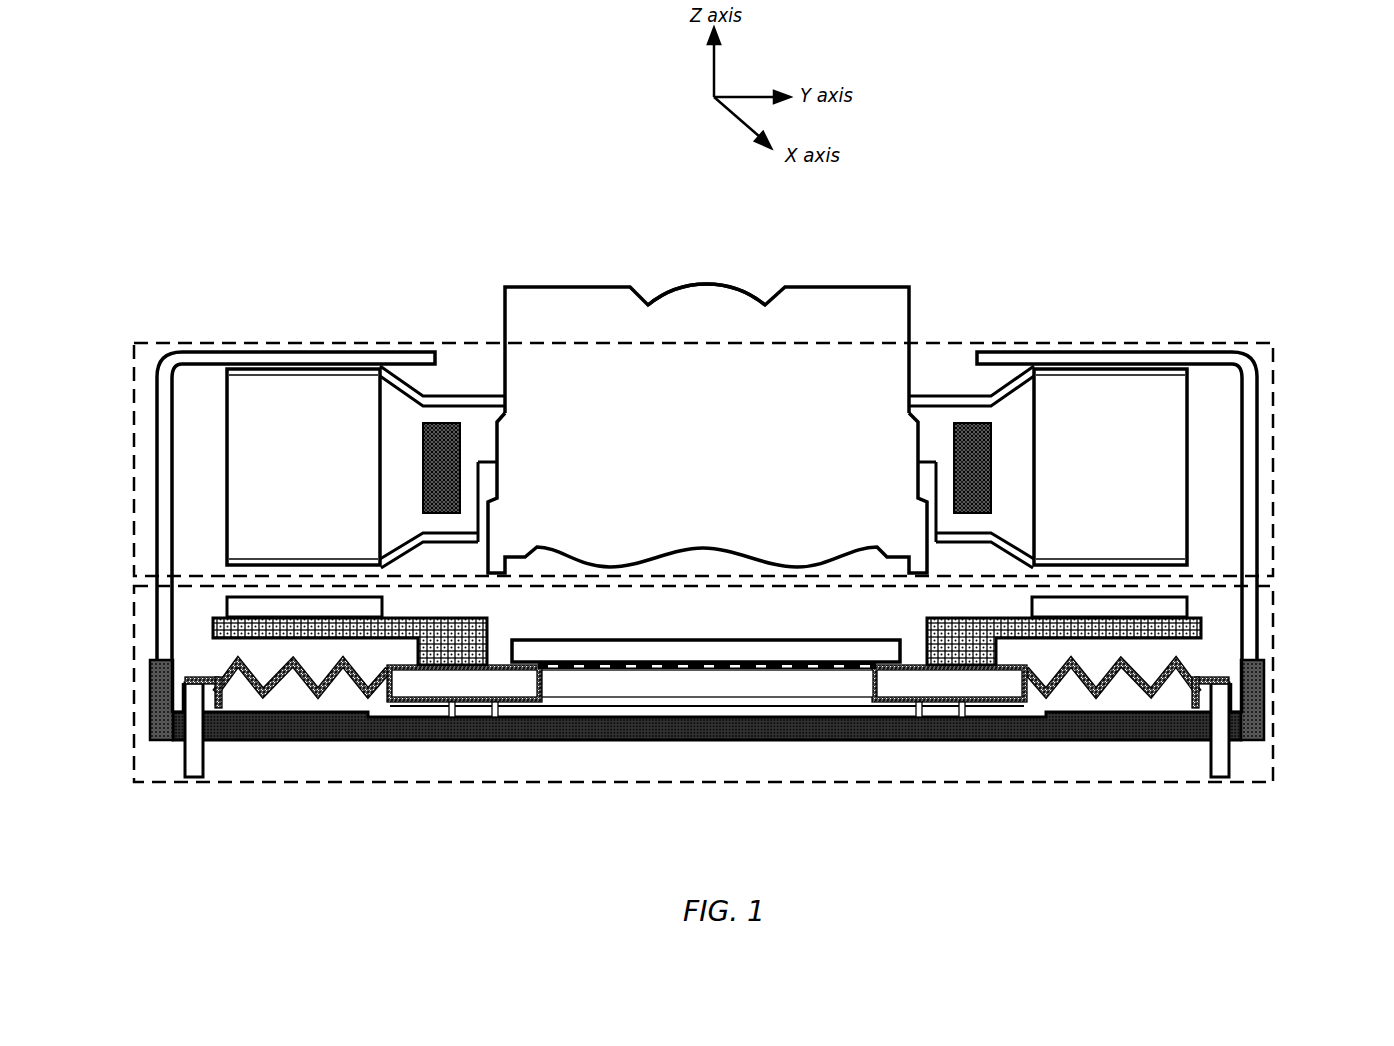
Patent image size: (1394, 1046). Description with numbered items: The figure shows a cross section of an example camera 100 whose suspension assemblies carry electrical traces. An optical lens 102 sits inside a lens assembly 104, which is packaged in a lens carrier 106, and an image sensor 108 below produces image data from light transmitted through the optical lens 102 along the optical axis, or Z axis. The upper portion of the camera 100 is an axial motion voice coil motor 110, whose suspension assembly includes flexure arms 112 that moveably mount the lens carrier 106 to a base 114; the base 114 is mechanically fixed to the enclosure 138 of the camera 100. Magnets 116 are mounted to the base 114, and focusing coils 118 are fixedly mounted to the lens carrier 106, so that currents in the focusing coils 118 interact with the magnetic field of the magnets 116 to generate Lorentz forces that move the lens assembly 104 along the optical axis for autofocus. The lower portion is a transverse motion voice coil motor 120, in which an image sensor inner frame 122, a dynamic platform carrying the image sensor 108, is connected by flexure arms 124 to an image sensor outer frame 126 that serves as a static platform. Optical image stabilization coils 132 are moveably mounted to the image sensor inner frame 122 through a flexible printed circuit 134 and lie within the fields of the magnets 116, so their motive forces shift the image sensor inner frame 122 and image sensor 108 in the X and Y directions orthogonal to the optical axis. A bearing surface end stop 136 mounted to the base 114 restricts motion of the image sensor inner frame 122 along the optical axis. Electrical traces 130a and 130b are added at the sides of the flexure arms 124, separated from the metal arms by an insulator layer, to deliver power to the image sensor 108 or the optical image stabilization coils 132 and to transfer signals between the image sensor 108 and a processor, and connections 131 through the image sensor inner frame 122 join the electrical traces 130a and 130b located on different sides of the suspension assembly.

The camera 100 is at (1043, 247).
The optical lens 102 is at (700, 297).
The lens assembly 104 is at (847, 290).
The lens carrier 106 is at (915, 412).
The image sensor 108 is at (698, 645).
The axial motion voice coil motor 110 is at (123, 558).
The flexure arms 112 is at (1060, 372).
The base 114 is at (808, 727).
The magnets 116 is at (1102, 388).
The focusing coils 118 is at (441, 422).
The transverse motion voice coil motor 120 is at (123, 780).
The image sensor inner frame 122 is at (740, 687).
The flexure arms 124 is at (282, 680).
The image sensor outer frame 126 is at (1235, 693).
The electrical trace 130a is at (227, 673).
The electrical trace 130b is at (230, 680).
The connections 131 is at (548, 683).
The optical image stabilization coils 132 is at (380, 609).
The flexible printed circuit 134 is at (478, 630).
The bearing surface end stop 136 is at (475, 707).
The enclosure 138 is at (1178, 352).